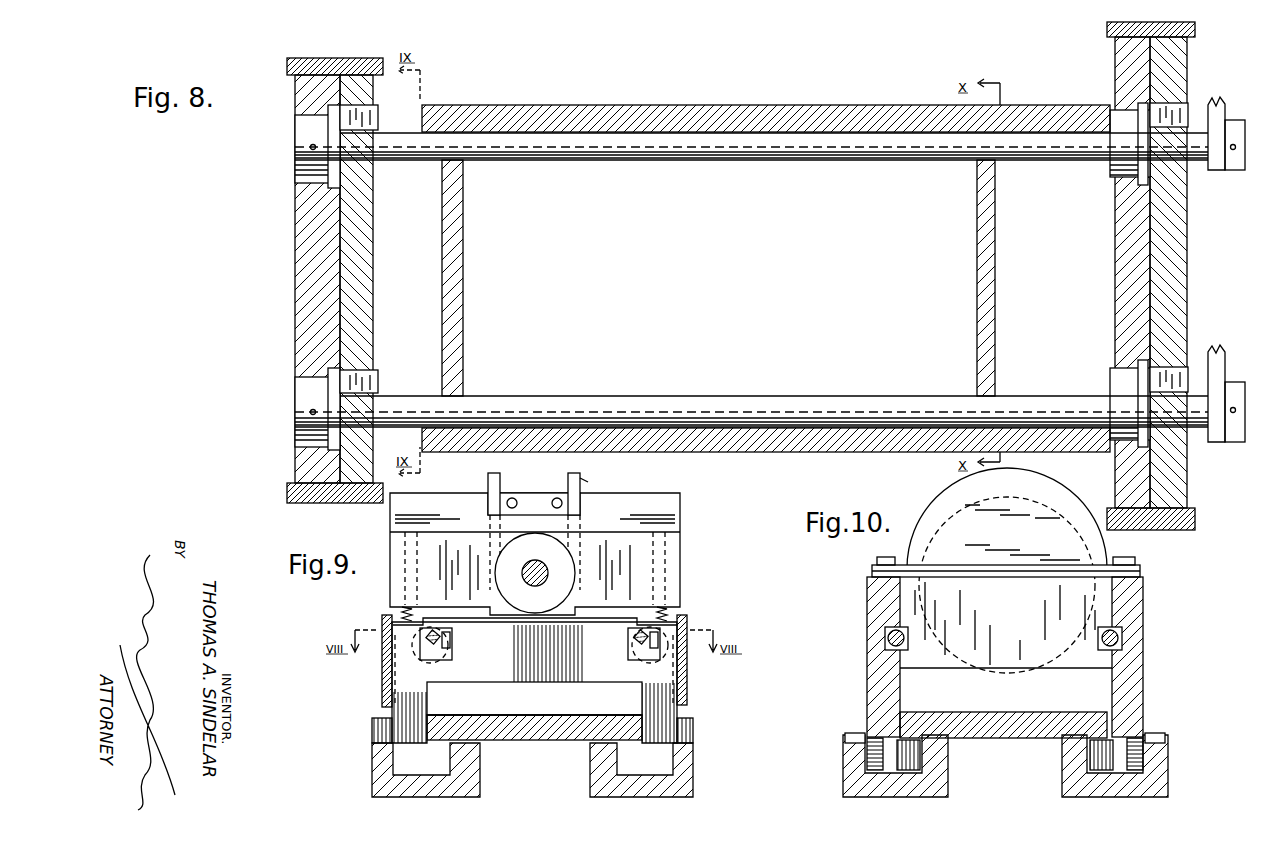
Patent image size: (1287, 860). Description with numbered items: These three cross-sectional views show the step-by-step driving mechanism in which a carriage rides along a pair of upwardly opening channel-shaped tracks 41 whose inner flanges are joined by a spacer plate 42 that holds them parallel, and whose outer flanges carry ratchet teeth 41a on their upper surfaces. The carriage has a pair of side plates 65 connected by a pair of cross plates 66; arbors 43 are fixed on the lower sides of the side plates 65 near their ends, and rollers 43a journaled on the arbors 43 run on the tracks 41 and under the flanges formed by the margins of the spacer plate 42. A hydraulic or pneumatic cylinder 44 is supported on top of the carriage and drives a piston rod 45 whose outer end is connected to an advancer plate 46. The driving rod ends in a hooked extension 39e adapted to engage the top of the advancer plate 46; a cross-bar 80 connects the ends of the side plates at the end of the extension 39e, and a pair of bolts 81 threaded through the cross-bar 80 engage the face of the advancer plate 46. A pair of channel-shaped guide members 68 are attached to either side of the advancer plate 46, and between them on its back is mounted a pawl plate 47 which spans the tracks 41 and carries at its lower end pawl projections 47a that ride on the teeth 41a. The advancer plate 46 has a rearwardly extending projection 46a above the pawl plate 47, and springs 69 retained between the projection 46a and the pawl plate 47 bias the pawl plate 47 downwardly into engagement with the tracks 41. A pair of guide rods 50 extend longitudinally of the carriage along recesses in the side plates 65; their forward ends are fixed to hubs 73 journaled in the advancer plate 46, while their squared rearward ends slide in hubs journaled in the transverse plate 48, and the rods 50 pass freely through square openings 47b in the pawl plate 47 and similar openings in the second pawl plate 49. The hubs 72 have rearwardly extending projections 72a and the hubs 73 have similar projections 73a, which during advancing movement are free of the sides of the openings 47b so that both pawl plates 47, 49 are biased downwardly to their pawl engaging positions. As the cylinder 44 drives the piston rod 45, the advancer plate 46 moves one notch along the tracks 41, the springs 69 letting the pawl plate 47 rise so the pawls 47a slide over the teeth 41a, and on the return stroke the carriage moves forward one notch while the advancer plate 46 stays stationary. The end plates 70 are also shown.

In FIG. 9, the hooked extension 39e is at (602, 476).
In FIG. 9, the tracks 41 is at (372, 780).
In FIG. 10, the tracks 41 is at (843, 780).
In FIG. 10, the ratchet teeth 41a is at (855, 733).
In FIG. 9, the spacer plate 42 is at (505, 740).
In FIG. 10, the spacer plate 42 is at (965, 738).
In FIG. 10, the arbors 43 is at (867, 752).
In FIG. 10, the rollers 43a is at (1090, 752).
In FIG. 10, the cylinder 44 is at (950, 515).
In FIG. 9, the piston rod 45 is at (548, 575).
In FIG. 8, the advancer plate 46 is at (296, 272).
In FIG. 9, the advancer plate 46 is at (680, 508).
In FIG. 9, the rearwardly extending projection 46a is at (640, 617).
In FIG. 8, the pawl plate 47 is at (373, 275).
In FIG. 9, the pawl plate 47 is at (545, 682).
In FIG. 9, the pawl projections 47a is at (372, 724).
In FIG. 9, the square openings 47b is at (448, 660).
In FIG. 8, the transverse plate 48 is at (1115, 290).
In FIG. 8, the pawl plate 49 is at (1187, 262).
In FIG. 8, the guide rods 50 is at (836, 162).
In FIG. 10, the guide rods 50 is at (885, 638).
In FIG. 8, the side plates 65 is at (740, 105).
In FIG. 10, the side plates 65 is at (867, 594).
In FIG. 8, the cross plates 66 is at (463, 278).
In FIG. 10, the cross plates 66 is at (1070, 668).
In FIG. 8, the channel shaped guide members 68 is at (297, 58).
In FIG. 9, the channel shaped guide members 68 is at (382, 673).
In FIG. 9, the springs 69 is at (405, 607).
In FIG. 8, the end plate 70 is at (1110, 30).
In FIG. 8, the hubs 72 is at (300, 125).
In FIG. 8, the rearwardly extending projections 72a is at (378, 117).
In FIG. 9, the rearwardly extending projections 72a is at (452, 645).
In FIG. 8, the hubs 73 is at (1112, 170).
In FIG. 8, the projections 73a is at (1180, 105).
In FIG. 9, the cross-bar 80 is at (532, 493).
In FIG. 9, the bolts 81 is at (507, 500).